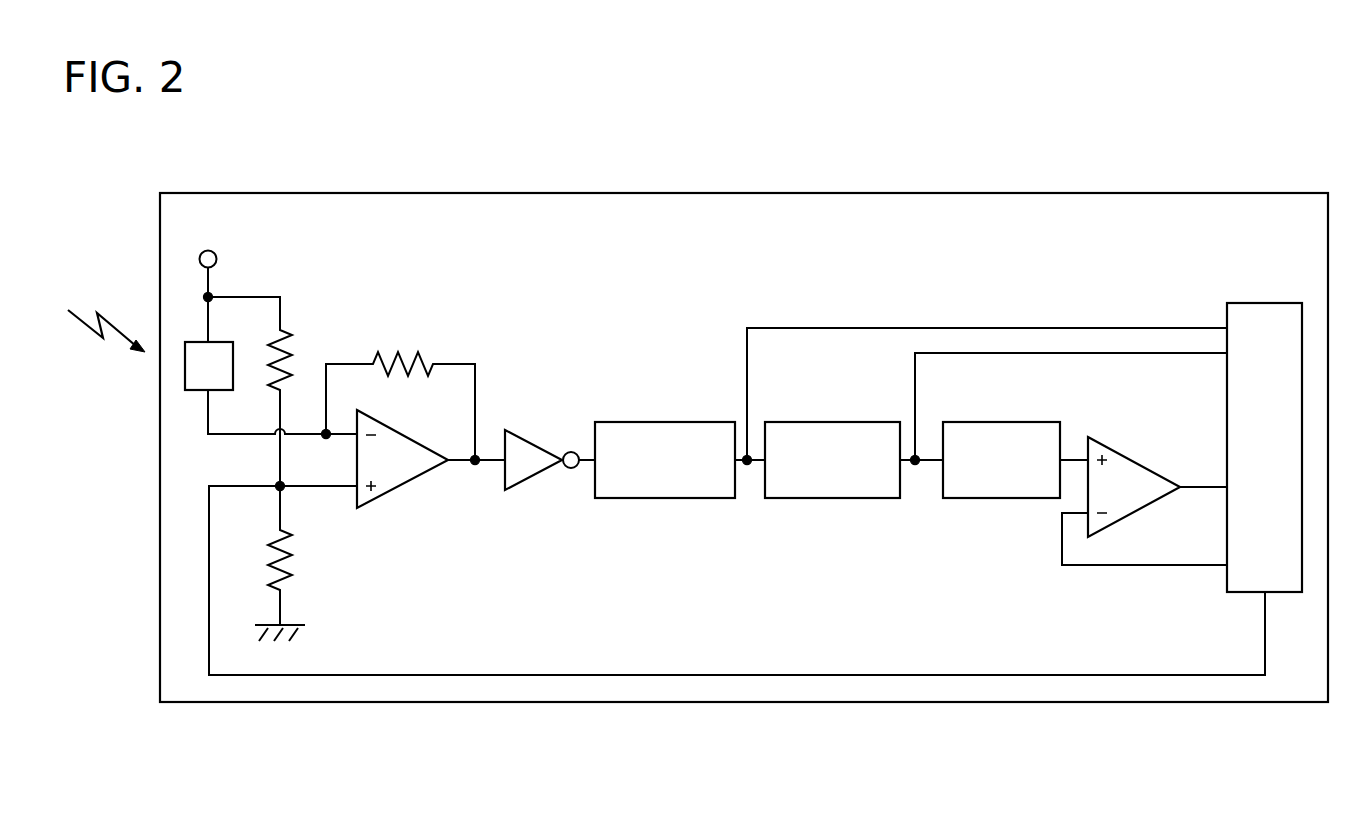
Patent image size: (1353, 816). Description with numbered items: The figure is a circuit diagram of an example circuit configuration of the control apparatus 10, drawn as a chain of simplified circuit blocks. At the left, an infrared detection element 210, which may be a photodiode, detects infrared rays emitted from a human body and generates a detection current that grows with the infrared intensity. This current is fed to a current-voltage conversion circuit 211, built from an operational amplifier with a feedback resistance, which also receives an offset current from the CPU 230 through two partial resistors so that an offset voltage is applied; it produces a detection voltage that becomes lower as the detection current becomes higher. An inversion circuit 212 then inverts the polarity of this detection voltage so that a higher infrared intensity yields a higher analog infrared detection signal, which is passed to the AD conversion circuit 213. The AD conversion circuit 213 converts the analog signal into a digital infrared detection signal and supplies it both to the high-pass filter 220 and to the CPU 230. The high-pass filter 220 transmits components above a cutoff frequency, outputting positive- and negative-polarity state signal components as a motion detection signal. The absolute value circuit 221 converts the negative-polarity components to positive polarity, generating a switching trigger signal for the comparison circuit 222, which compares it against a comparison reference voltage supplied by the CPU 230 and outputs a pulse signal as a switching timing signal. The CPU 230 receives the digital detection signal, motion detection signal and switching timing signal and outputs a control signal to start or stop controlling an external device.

The control apparatus 10 is at (1195, 193).
The infrared detection element 210 is at (220, 342).
The current-voltage conversion circuit 211 is at (397, 490).
The inversion circuit 212 is at (526, 432).
The AD conversion circuit 213 is at (648, 422).
The high-pass filter 220 is at (815, 422).
The absolute value circuit 221 is at (987, 422).
The comparison circuit 222 is at (1128, 455).
The CPU 230 is at (1268, 303).